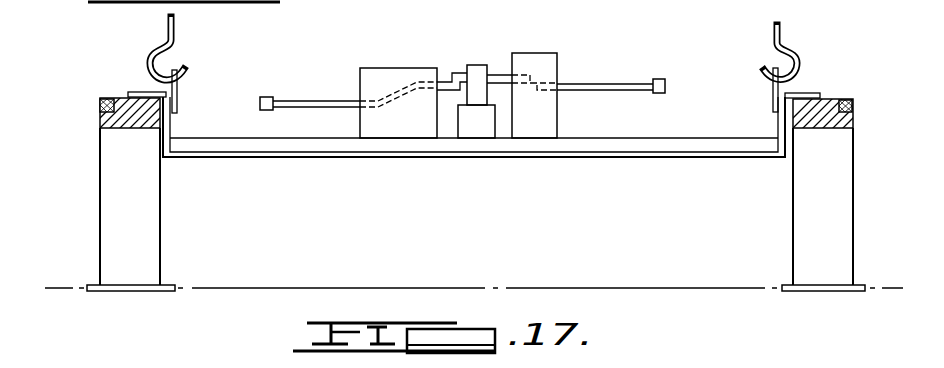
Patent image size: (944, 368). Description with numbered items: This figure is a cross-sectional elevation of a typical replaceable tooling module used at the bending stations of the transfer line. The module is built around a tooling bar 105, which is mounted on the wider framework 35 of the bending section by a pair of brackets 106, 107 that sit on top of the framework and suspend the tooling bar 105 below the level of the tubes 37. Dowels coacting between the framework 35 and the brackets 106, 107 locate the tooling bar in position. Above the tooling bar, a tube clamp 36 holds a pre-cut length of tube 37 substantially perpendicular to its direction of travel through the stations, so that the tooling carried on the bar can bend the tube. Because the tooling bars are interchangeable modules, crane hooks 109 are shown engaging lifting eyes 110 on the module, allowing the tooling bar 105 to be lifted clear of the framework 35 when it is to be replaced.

The framework 35 is at (123, 128).
The tube clamp 36 is at (478, 65).
The tube 37 is at (593, 82).
The tooling bar 105 is at (673, 147).
The bracket 106 is at (137, 90).
The bracket 107 is at (813, 93).
The crane hook 109 is at (176, 36).
The lifting eye 110 is at (178, 82).